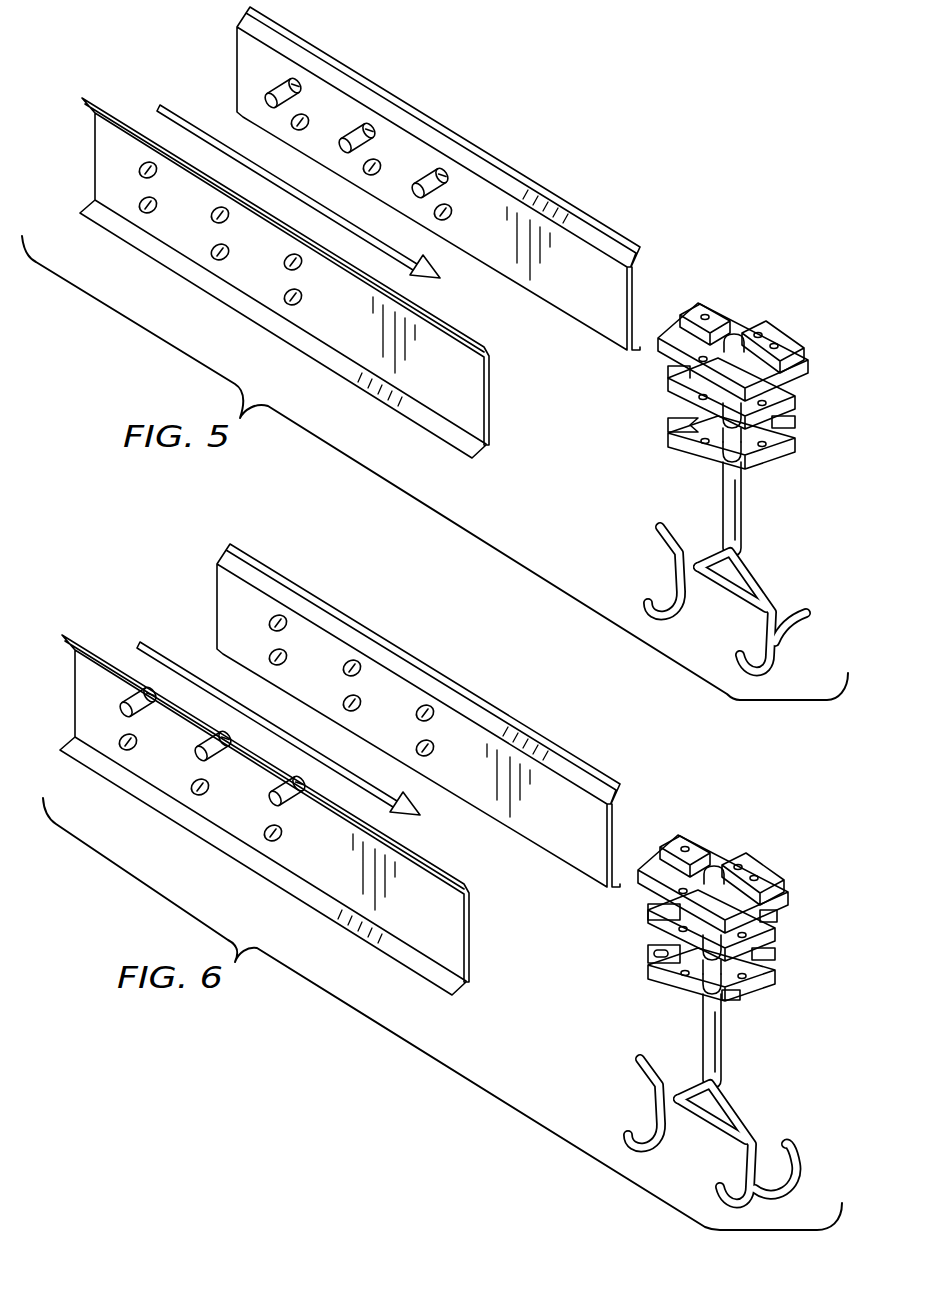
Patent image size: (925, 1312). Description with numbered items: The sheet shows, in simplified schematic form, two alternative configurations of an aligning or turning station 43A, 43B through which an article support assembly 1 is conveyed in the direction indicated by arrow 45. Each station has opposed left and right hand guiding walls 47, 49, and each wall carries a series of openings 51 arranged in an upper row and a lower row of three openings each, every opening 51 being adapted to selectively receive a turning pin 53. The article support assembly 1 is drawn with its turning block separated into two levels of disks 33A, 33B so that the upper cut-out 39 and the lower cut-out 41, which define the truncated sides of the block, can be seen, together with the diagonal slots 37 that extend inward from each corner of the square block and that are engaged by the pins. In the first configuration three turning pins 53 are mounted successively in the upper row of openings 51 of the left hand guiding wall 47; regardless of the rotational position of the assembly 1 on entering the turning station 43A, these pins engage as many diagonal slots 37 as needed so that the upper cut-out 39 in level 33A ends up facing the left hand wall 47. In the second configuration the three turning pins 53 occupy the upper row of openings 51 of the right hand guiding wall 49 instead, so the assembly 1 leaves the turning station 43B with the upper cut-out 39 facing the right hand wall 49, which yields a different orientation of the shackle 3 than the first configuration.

In FIG. 5, the article support assembly 1 is at (764, 503).
In FIG. 6, the article support assembly 1 is at (744, 1033).
In FIG. 5, the shackle 3 is at (673, 573).
In FIG. 6, the shackle 3 is at (653, 1103).
In FIG. 5, the upper disk of turning block 33A is at (795, 400).
In FIG. 6, the upper disk of turning block 33A is at (776, 932).
In FIG. 5, the lower disk of turning block 33B is at (795, 445).
In FIG. 6, the lower disk of turning block 33B is at (776, 962).
In FIG. 5, the diagonal slots 37 is at (678, 372).
In FIG. 6, the diagonal slots 37 is at (772, 916).
In FIG. 5, the upper cut-out 39 is at (782, 336).
In FIG. 6, the upper cut-out 39 is at (762, 866).
In FIG. 5, the lower cut-out 41 is at (690, 425).
In FIG. 6, the lower cut-out 41 is at (735, 976).
In FIG. 5, the turning station 43A is at (609, 185).
In FIG. 6, the turning station 43B is at (624, 768).
In FIG. 5, the arrow 45 is at (197, 115).
In FIG. 6, the arrow 45 is at (177, 655).
In FIG. 5, the left hand guiding wall 47 is at (594, 292).
In FIG. 6, the left hand guiding wall 47 is at (573, 829).
In FIG. 5, the right hand guiding wall 49 is at (452, 381).
In FIG. 6, the right hand guiding wall 49 is at (432, 917).
In FIG. 5, the openings 51 is at (308, 116).
In FIG. 6, the openings 51 is at (287, 654).
In FIG. 5, the turning pins 53 is at (296, 80).
In FIG. 6, the turning pins 53 is at (118, 708).